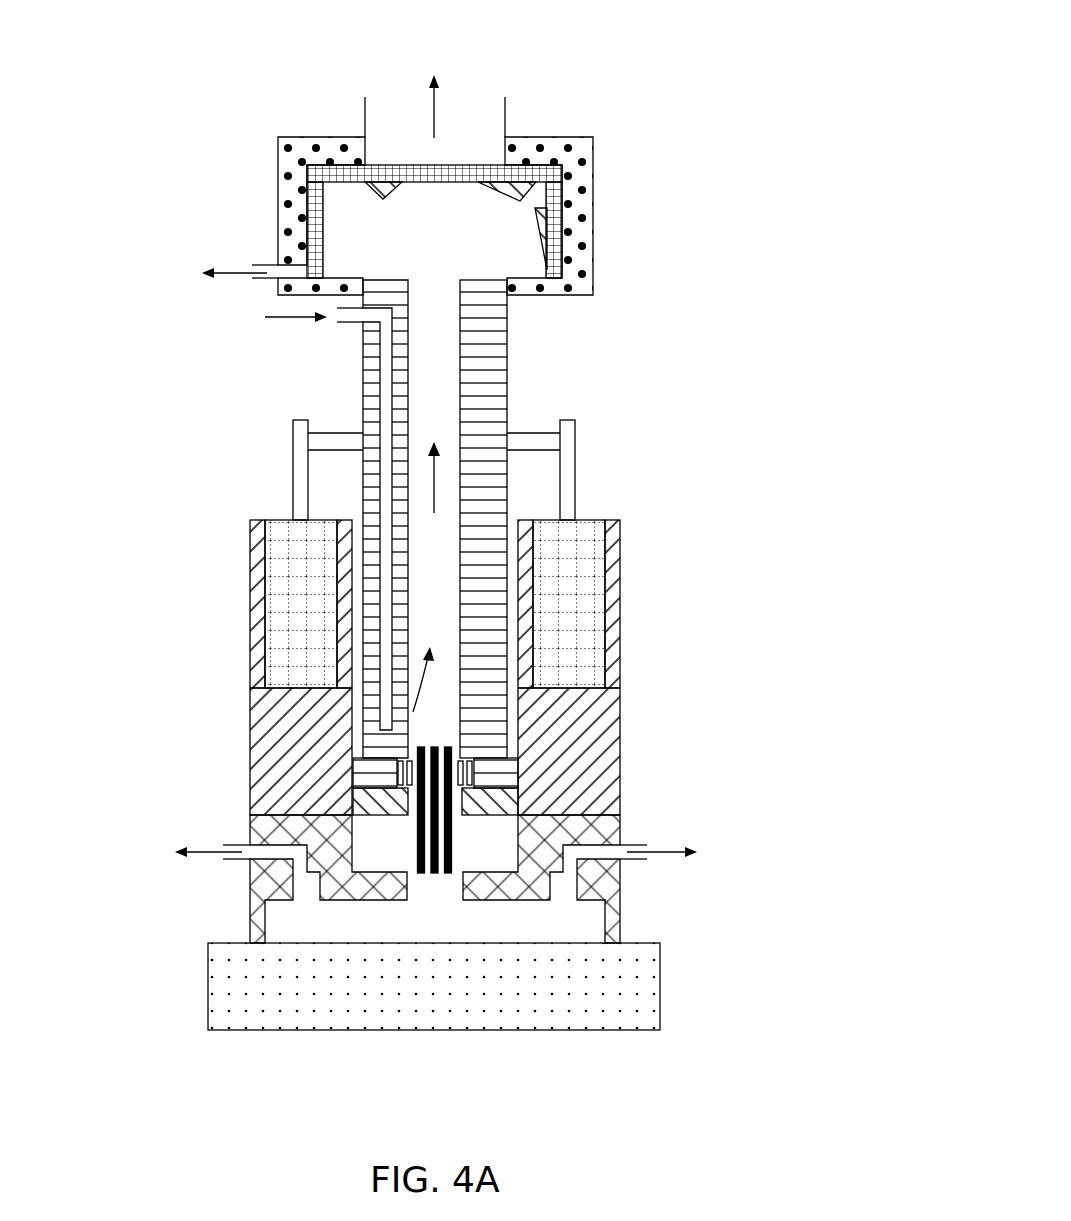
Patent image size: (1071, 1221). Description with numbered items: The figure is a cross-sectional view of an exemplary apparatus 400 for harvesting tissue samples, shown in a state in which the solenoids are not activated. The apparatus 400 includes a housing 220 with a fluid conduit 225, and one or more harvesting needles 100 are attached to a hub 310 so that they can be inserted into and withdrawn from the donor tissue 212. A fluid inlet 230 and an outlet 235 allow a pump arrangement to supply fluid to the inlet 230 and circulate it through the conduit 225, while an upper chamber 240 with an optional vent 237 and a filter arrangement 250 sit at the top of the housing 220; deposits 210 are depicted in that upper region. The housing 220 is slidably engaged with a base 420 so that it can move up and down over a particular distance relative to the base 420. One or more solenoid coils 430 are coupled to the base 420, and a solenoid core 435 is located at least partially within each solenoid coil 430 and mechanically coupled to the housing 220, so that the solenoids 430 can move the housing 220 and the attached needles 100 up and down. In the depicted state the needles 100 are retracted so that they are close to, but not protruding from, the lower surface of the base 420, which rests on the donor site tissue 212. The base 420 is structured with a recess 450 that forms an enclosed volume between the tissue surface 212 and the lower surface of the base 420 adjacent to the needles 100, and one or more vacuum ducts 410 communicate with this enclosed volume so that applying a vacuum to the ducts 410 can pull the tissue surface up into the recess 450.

The apparatus 400 is at (439, 518).
The vent 237 is at (480, 122).
The upper chamber 240 is at (290, 160).
The filter arrangement 250 is at (310, 217).
The deposits 210 is at (537, 222).
The outlet 235 is at (267, 278).
The fluid inlet 230 is at (345, 322).
The housing 220 is at (487, 357).
The fluid conduit 225 is at (428, 405).
The solenoid core 435 is at (305, 502).
The solenoid coil 430 is at (277, 602).
The base 420 is at (270, 777).
The hub 310 is at (387, 758).
The harvesting needle 100 is at (447, 837).
The vacuum duct 410 is at (242, 847).
The donor tissue 212 is at (225, 948).
The recess 450 is at (507, 925).